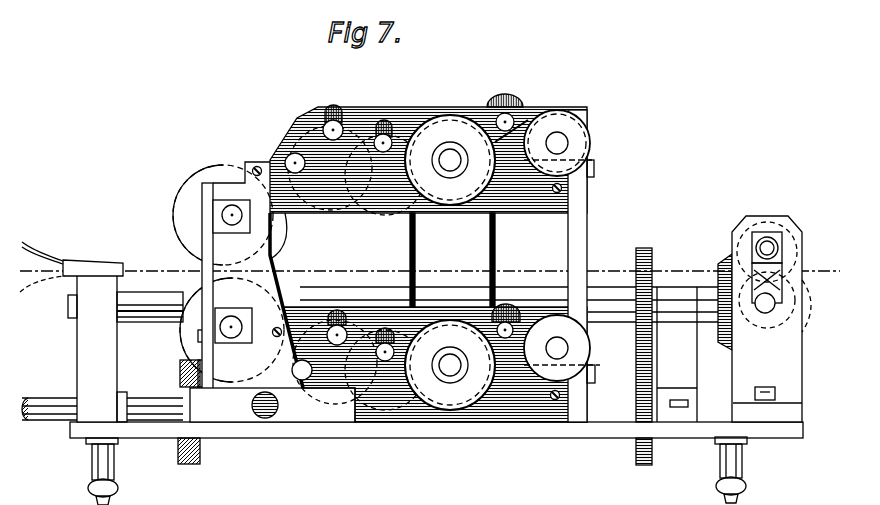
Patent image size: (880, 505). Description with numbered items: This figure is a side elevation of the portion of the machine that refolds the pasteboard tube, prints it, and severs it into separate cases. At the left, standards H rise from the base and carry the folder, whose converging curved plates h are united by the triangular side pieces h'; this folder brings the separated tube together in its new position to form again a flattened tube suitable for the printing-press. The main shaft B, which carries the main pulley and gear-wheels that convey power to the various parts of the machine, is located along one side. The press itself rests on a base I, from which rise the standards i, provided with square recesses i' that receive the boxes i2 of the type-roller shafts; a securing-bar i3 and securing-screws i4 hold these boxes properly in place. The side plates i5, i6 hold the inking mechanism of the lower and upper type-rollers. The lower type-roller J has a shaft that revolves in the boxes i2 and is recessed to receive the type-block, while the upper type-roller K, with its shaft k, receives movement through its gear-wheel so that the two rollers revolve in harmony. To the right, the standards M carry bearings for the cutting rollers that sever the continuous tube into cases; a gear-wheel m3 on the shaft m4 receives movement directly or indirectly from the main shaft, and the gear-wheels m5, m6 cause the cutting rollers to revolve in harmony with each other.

The base I is at (436, 463).
The standard H is at (112, 340).
The converging curved plate h is at (42, 269).
The triangular side piece h' is at (93, 259).
The main shaft B is at (56, 396).
The lower type-roller J is at (180, 336).
The upper type-roller K is at (238, 154).
The shaft k is at (232, 215).
The standard i is at (272, 405).
The square recess i' is at (236, 276).
The box i2 is at (232, 236).
The securing-bar i3 is at (212, 291).
The securing-screw i4 is at (200, 258).
The side plate i5 is at (435, 363).
The side plate i6 is at (433, 108).
The standard M is at (767, 319).
The gear-wheel m3 is at (816, 296).
The shaft m4 is at (762, 306).
The gear-wheel m5 is at (789, 232).
The gear-wheel m6 is at (775, 325).